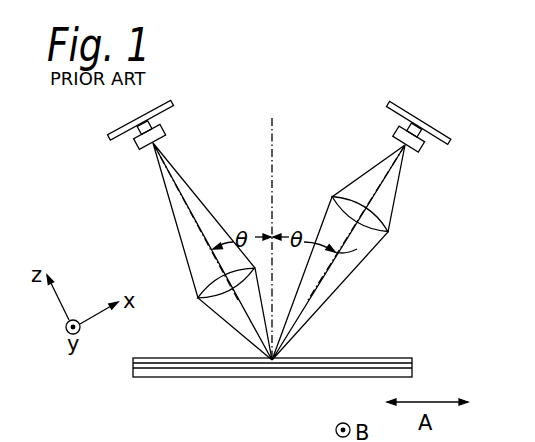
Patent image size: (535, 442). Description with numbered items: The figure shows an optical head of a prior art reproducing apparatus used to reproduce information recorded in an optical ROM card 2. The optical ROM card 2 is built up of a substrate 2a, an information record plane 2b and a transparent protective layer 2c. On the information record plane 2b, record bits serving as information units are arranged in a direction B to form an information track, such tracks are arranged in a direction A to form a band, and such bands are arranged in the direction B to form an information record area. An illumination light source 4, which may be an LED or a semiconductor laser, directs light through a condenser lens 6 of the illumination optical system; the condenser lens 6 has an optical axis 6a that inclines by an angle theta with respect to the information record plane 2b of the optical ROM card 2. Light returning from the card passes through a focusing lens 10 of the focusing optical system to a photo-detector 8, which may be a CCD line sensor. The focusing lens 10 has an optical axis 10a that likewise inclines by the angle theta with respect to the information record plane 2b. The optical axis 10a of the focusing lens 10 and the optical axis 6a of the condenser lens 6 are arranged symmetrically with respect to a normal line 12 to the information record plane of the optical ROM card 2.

The optical ROM card 2 is at (319, 350).
The substrate 2a is at (413, 376).
The information record plane 2b is at (413, 366).
The transparent protective layer 2c is at (413, 358).
The illumination light source 4 is at (428, 147).
The condenser lens 6 is at (392, 226).
The optical axis 6a is at (340, 250).
The photo-detector 8 is at (141, 152).
The focusing lens 10 is at (203, 284).
The optical axis 10a is at (193, 224).
The normal line 12 is at (273, 128).